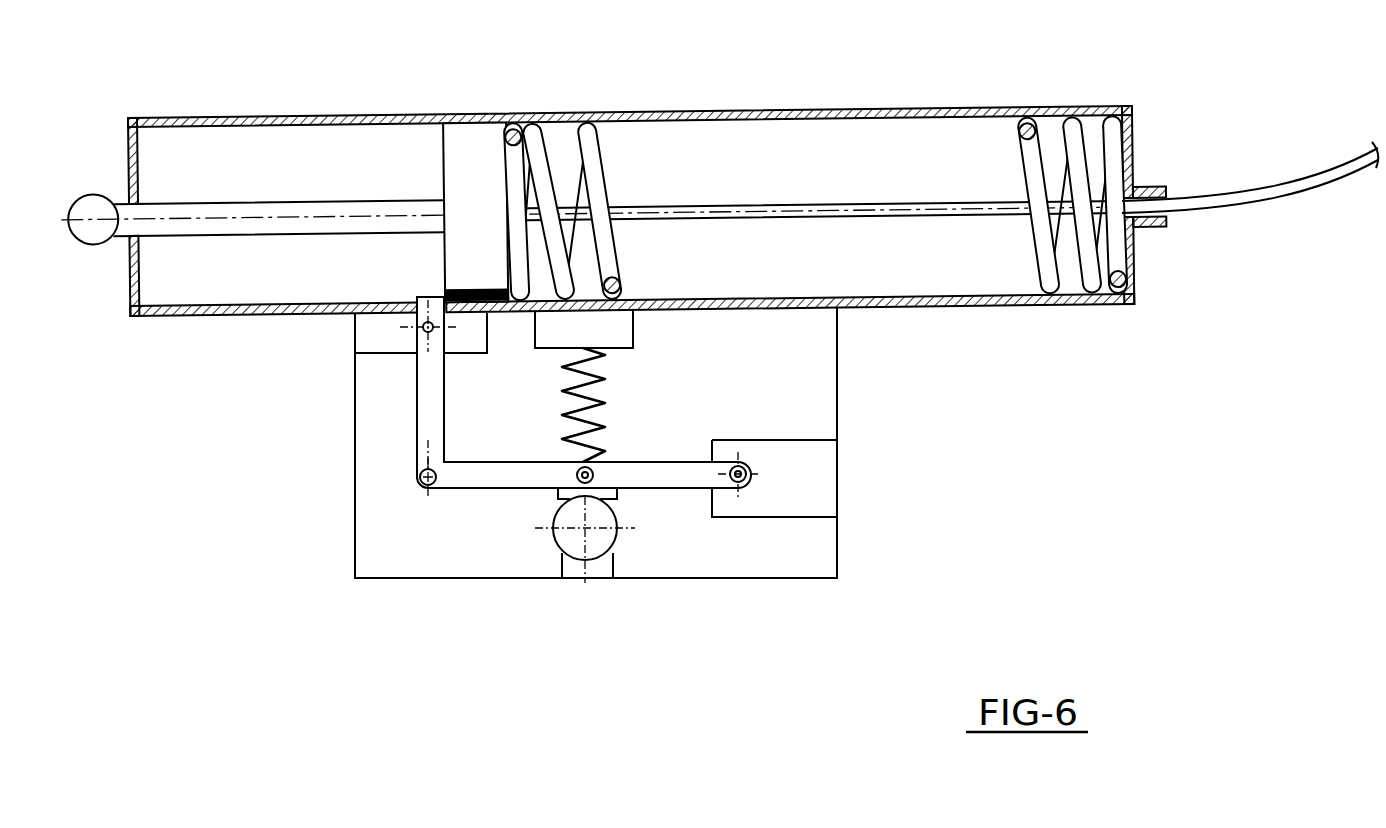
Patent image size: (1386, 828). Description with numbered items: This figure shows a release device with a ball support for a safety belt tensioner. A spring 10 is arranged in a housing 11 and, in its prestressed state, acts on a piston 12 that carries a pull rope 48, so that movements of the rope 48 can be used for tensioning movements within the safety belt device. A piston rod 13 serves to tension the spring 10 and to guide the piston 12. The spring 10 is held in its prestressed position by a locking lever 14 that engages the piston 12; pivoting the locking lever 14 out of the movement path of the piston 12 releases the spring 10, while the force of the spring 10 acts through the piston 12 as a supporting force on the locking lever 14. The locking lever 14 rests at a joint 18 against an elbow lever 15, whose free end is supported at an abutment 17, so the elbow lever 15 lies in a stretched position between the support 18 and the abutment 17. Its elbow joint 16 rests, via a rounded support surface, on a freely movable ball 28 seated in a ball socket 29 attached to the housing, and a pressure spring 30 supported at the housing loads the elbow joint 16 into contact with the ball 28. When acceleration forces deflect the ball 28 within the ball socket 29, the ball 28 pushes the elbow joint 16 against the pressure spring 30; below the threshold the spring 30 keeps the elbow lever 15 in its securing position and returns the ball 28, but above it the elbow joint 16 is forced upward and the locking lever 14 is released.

The spring 10 is at (586, 146).
The housing 11 is at (785, 120).
The piston 12 is at (468, 156).
The piston rod 13 is at (258, 204).
The locking lever 14 is at (425, 405).
The elbow lever 15 is at (703, 472).
The elbow joint 16 is at (593, 483).
The abutment 17 is at (823, 453).
The joint 18 is at (417, 479).
The ball 28 is at (580, 536).
The ball socket 29 is at (602, 568).
The pressure spring 30 is at (565, 420).
The pull rope 48 is at (1252, 192).